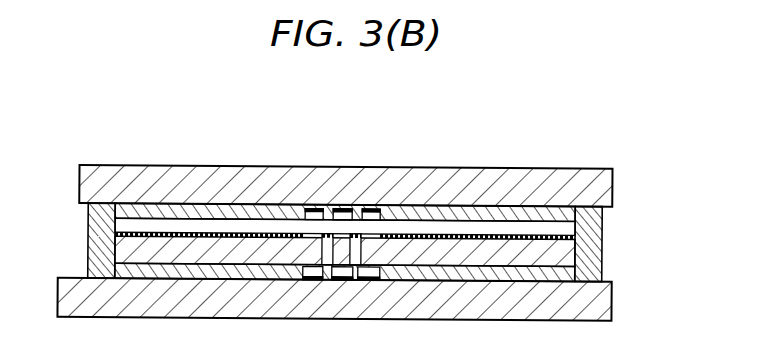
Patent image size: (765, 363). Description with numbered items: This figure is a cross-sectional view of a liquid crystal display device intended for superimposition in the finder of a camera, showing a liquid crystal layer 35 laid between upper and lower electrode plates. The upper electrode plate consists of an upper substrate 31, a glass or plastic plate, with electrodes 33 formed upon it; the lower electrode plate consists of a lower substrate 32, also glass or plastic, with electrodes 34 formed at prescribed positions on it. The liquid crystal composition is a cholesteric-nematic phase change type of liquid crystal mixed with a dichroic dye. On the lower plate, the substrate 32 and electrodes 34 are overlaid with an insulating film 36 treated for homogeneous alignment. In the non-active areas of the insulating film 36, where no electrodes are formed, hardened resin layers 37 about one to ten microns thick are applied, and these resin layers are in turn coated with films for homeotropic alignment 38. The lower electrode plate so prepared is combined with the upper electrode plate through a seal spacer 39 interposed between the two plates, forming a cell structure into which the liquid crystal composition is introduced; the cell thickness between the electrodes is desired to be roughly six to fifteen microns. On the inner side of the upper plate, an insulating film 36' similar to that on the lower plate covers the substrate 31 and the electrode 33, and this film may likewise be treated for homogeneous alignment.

The upper substrate 31 is at (602, 185).
The lower substrate 32 is at (603, 303).
The electrodes 33 is at (312, 207).
The electrodes 34 is at (313, 278).
The liquid crystal layer 35 is at (572, 229).
The insulating film 36 is at (384, 268).
The insulating film 36' is at (345, 176).
The hardened resin layer 37 is at (204, 240).
The film for homeotropic alignment 38 is at (140, 228).
The seal spacer 39 is at (95, 237).